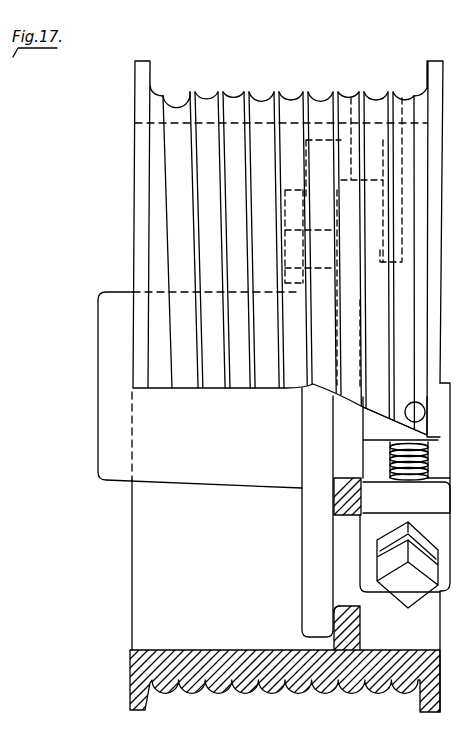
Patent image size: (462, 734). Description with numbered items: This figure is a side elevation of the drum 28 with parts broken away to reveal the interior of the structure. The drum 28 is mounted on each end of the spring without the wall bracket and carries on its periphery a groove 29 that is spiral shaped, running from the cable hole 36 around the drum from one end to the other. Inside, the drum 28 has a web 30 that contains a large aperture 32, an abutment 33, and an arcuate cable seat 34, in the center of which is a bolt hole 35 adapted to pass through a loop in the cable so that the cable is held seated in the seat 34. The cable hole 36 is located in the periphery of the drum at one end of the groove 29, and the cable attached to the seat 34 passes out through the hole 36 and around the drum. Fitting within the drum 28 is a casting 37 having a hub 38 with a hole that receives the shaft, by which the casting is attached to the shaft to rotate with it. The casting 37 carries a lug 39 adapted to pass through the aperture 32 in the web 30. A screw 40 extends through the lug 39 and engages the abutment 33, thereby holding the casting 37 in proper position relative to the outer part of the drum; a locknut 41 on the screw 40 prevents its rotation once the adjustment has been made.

The drum 28 is at (135, 124).
The groove 29 is at (206, 95).
The web 30 is at (337, 503).
The large aperture 32 is at (337, 607).
The abutment 33 is at (373, 426).
The arcuate cable seat 34 is at (402, 98).
The bolt hole 35 is at (351, 98).
The cable hole 36 is at (405, 410).
The casting 37 is at (312, 596).
The hub 38 is at (207, 470).
The lug 39 is at (377, 523).
The screw 40 is at (390, 457).
The locknut 41 is at (382, 552).